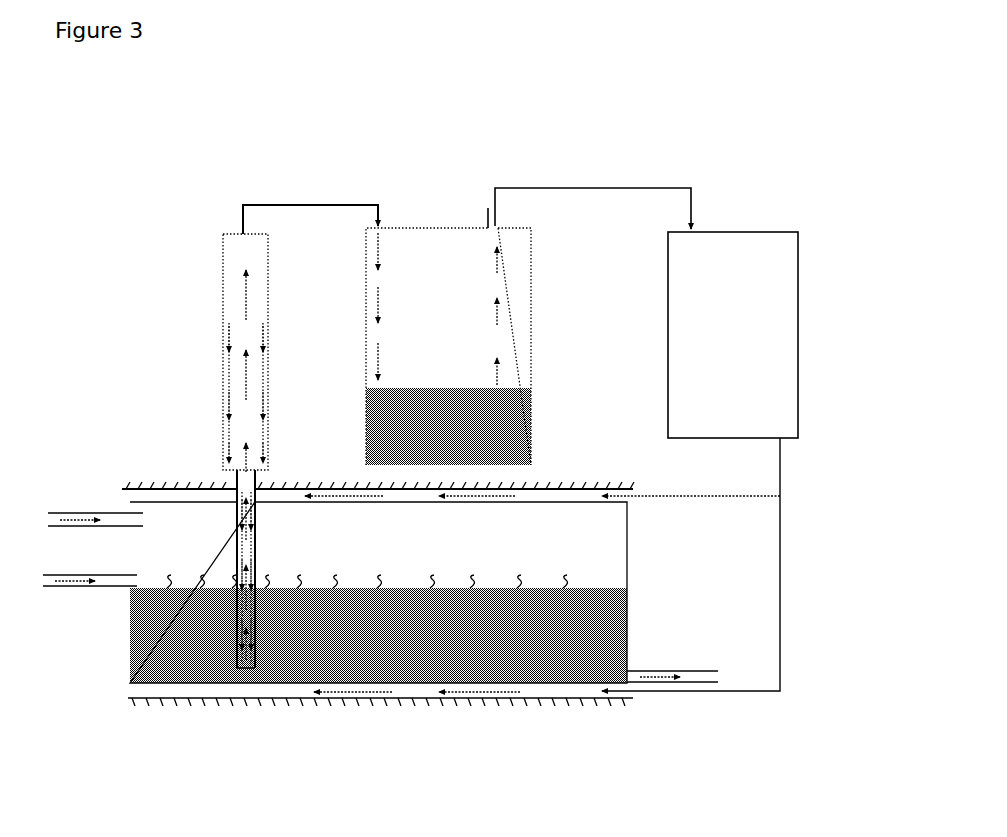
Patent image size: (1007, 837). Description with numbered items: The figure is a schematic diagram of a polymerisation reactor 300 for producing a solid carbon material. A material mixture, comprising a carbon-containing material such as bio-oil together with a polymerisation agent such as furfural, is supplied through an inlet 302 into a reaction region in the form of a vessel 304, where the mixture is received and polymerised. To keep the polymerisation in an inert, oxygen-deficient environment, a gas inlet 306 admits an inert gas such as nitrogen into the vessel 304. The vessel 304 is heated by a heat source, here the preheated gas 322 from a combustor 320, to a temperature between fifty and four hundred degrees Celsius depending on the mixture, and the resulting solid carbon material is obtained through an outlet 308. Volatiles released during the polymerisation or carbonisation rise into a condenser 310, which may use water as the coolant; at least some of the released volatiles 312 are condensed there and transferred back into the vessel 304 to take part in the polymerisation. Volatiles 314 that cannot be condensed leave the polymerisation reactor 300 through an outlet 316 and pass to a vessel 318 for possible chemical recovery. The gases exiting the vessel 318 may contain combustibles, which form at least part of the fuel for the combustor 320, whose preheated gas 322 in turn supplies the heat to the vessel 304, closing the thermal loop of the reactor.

The polymerisation reactor 300 is at (80, 229).
The inlet 302 is at (60, 590).
The vessel 304 is at (278, 662).
The gas inlet 306 is at (55, 511).
The outlet 308 is at (683, 670).
The condenser 310 is at (228, 302).
The released volatiles 312 is at (230, 397).
The volatiles 314 is at (246, 285).
The outlet 316 is at (243, 232).
The vessel 318 is at (530, 323).
The combustor 320 is at (802, 337).
The preheated gas 322 is at (783, 572).